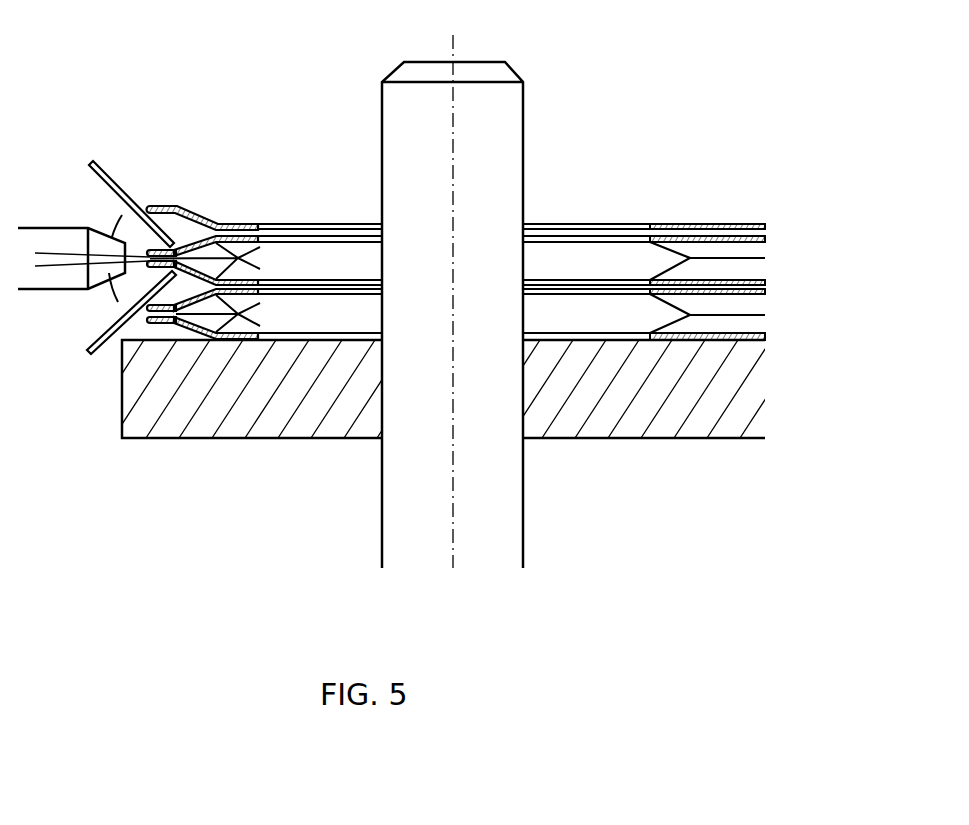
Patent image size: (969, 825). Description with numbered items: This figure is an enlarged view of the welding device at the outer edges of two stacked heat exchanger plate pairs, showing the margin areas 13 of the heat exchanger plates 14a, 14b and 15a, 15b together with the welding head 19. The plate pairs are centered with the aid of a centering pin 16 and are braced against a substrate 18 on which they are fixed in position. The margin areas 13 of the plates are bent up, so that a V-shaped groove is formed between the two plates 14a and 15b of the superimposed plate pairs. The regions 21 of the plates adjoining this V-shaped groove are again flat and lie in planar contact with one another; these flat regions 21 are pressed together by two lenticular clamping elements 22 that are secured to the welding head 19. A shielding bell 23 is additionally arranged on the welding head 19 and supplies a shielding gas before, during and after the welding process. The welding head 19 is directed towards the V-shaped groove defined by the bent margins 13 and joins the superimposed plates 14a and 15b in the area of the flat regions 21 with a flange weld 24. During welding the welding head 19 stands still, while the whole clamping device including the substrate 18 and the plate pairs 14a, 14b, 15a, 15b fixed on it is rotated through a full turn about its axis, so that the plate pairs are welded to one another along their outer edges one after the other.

The margin area 13 is at (150, 208).
The heat exchanger plate 14a is at (202, 330).
The heat exchanger plate 14b is at (233, 290).
The heat exchanger plate 15a is at (237, 224).
The heat exchanger plate 15b is at (258, 232).
The centering pin 16 is at (523, 546).
The substrate 18 is at (582, 415).
The welding head 19 is at (30, 289).
The flat region 21 is at (190, 234).
The lenticular clamping element 22 is at (92, 163).
The shielding bell 23 is at (113, 222).
The flange weld 24 is at (157, 206).